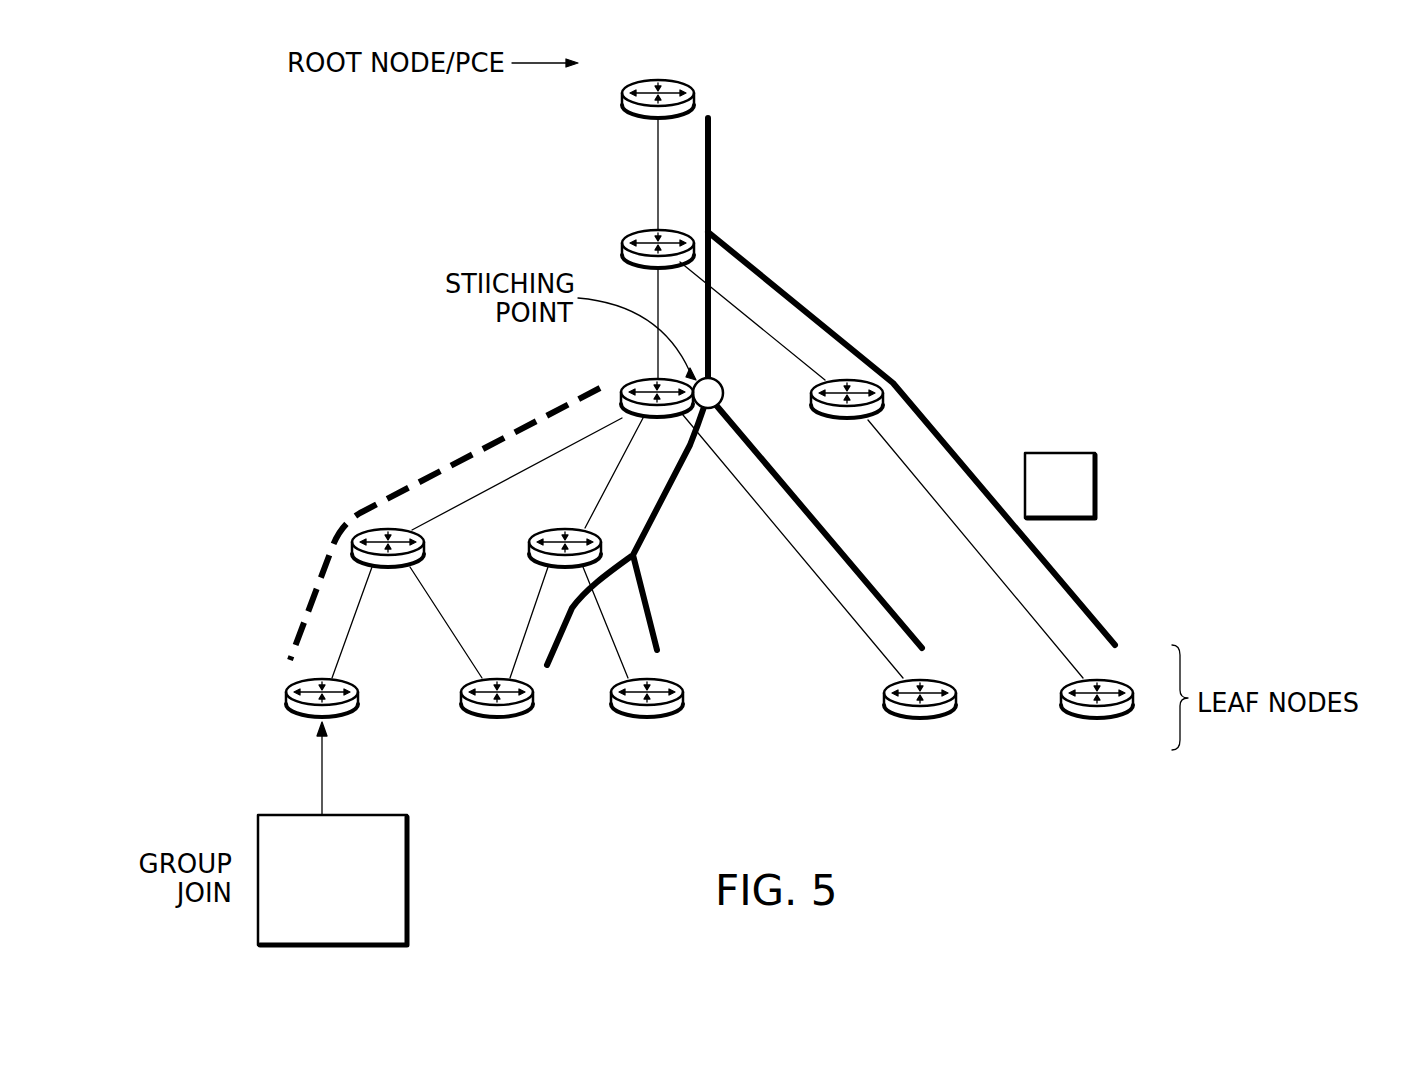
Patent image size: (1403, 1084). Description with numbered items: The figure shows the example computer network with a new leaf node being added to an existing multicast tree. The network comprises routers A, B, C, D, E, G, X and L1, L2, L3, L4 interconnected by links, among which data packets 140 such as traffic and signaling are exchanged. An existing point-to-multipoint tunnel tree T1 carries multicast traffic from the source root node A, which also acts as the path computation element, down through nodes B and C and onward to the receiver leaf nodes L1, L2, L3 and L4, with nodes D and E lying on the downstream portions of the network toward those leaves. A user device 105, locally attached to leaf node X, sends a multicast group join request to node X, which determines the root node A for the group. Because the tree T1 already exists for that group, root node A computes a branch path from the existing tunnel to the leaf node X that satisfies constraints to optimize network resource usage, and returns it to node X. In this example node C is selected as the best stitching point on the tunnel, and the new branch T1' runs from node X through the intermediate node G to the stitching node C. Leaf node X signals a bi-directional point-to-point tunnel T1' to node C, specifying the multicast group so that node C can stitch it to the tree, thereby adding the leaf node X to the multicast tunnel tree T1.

The user device 105 is at (310, 923).
The data packets 140 is at (1043, 505).
The root node A is at (640, 82).
The node B is at (640, 232).
The selected node C is at (640, 383).
The node D is at (534, 562).
The node E is at (826, 418).
The intermediate node G is at (416, 564).
The leaf node X is at (292, 712).
The leaf node L1 is at (500, 722).
The leaf node L2 is at (650, 722).
The leaf node L3 is at (930, 723).
The leaf node L4 is at (1105, 723).
The multicast tunnel tree T1 is at (831, 391).
The branch tunnel T1' is at (445, 524).